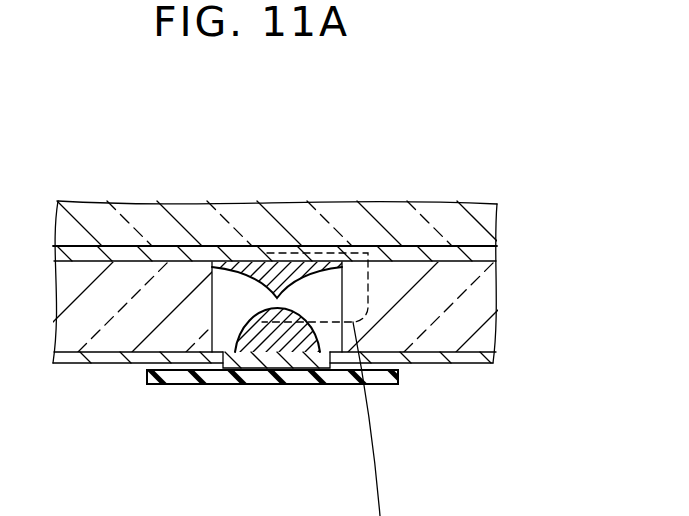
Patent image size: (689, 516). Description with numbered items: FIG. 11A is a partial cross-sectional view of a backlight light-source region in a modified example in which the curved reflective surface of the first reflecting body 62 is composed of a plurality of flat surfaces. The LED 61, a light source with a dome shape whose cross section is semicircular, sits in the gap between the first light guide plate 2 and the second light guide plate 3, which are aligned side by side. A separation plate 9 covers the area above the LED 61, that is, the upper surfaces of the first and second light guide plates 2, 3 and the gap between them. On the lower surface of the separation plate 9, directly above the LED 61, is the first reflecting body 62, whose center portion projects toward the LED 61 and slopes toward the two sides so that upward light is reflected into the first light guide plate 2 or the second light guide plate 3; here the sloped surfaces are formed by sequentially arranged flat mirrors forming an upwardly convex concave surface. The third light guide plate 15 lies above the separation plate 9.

The third light guide plate 15 is at (143, 222).
The first reflecting body 62 is at (278, 282).
The separation plate 9 is at (473, 258).
The first light guide plate 2 is at (117, 333).
The second light guide plate 3 is at (446, 333).
The LED 61 is at (277, 338).